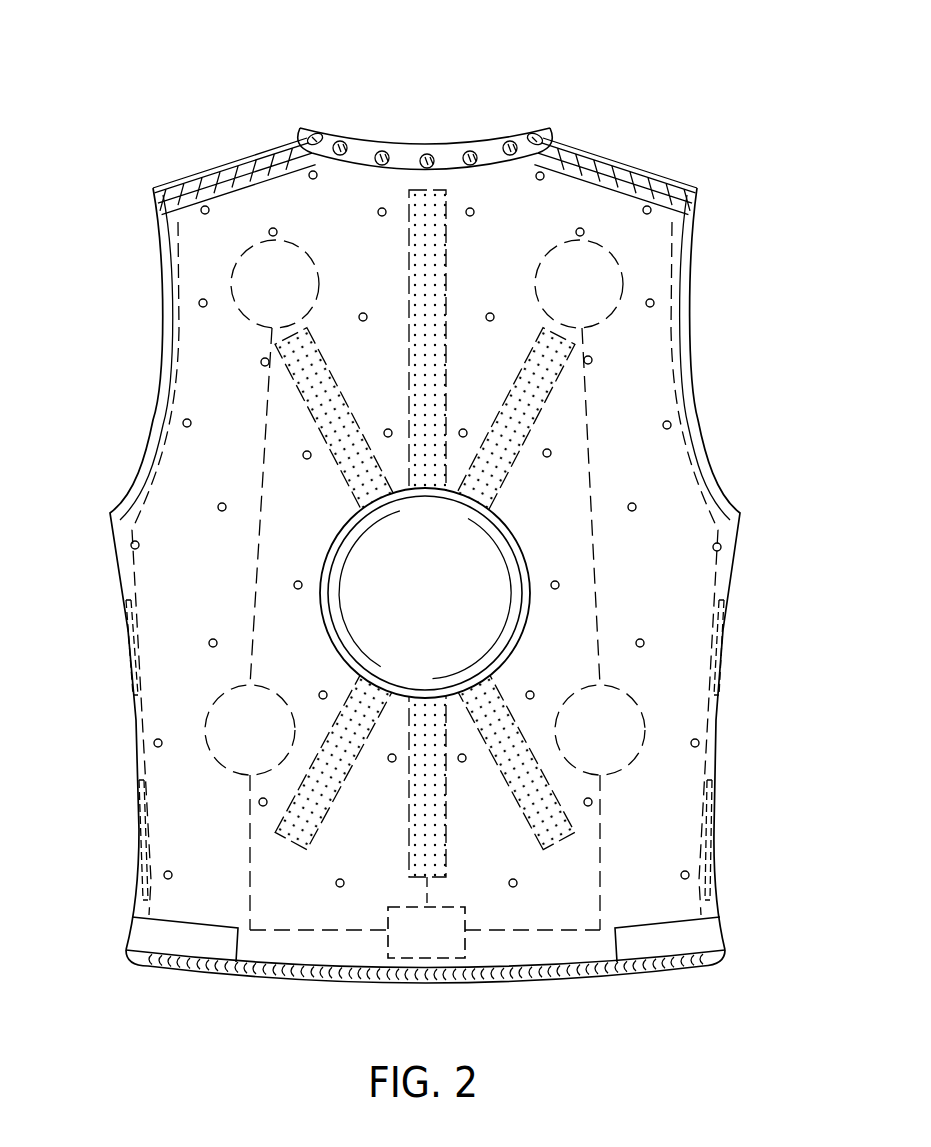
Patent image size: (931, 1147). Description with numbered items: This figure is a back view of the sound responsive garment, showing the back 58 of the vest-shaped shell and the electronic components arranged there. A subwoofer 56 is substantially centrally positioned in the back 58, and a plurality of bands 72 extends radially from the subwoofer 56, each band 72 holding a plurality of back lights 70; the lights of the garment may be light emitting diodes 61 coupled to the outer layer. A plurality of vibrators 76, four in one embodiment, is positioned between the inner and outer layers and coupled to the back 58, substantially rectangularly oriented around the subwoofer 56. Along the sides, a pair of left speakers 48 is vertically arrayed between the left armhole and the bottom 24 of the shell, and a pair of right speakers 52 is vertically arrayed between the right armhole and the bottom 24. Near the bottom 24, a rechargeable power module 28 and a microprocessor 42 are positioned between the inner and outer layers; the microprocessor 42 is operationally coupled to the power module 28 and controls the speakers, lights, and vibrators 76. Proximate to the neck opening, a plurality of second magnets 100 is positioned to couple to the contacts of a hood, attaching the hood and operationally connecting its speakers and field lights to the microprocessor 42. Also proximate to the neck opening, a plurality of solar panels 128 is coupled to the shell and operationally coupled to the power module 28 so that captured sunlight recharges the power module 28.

The solar panels 128 is at (232, 162).
The second magnets 100 is at (502, 141).
The vibrators 76 is at (302, 278).
The bands 72 is at (328, 417).
The back lights 70 is at (500, 487).
The subwoofer 56 is at (473, 577).
The back 58 is at (662, 593).
The light emitting diodes 61 is at (212, 503).
The left speakers 48 is at (125, 656).
The right speakers 52 is at (719, 832).
The bottom 24 is at (178, 962).
The microprocessor 42 is at (412, 937).
The power module 28 is at (657, 946).